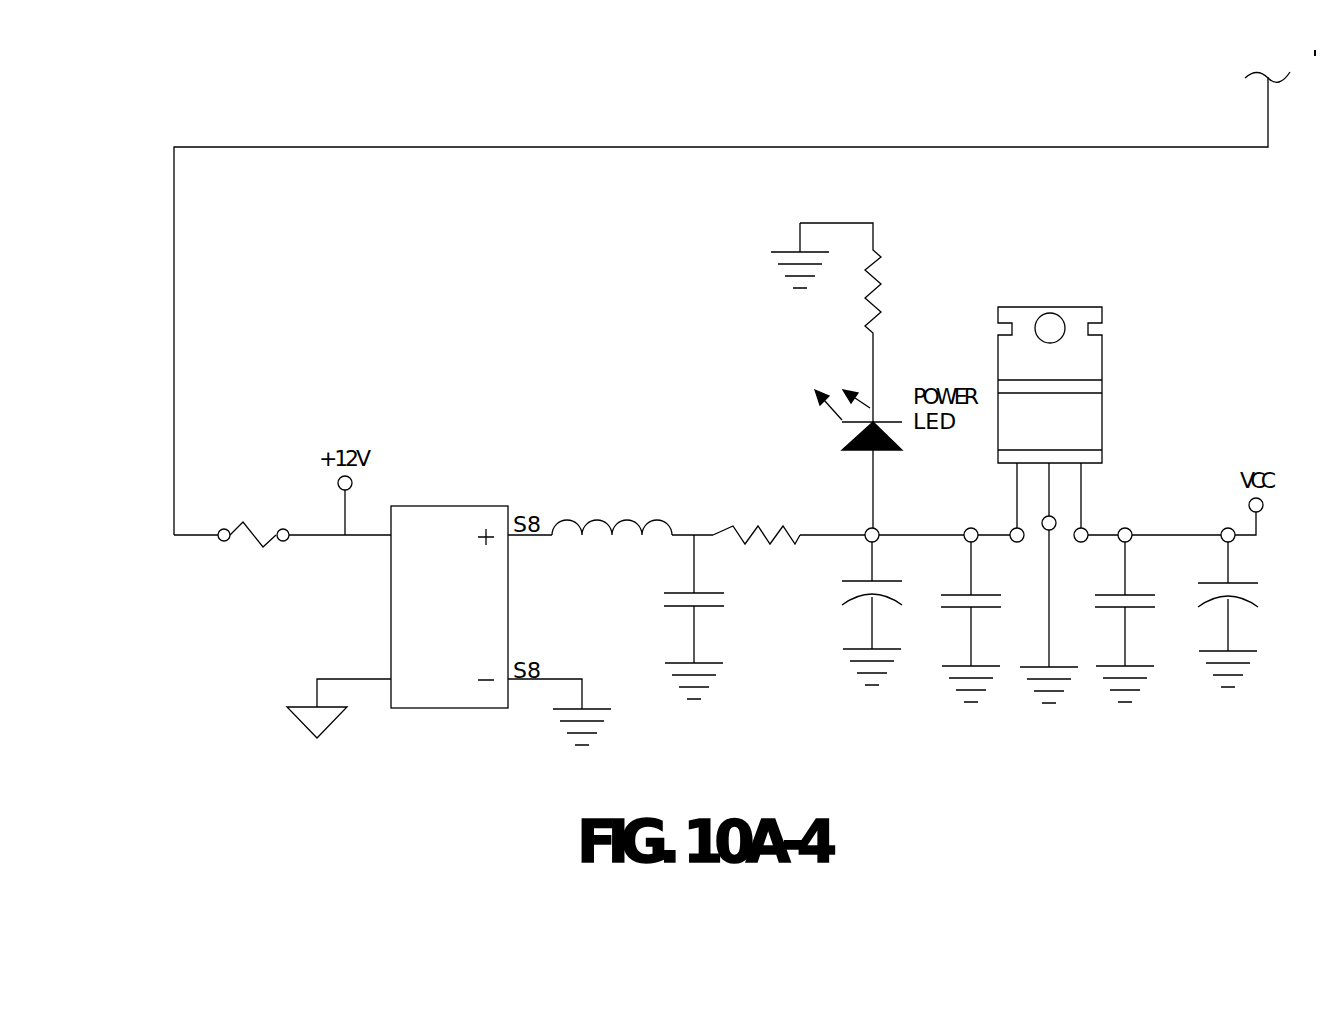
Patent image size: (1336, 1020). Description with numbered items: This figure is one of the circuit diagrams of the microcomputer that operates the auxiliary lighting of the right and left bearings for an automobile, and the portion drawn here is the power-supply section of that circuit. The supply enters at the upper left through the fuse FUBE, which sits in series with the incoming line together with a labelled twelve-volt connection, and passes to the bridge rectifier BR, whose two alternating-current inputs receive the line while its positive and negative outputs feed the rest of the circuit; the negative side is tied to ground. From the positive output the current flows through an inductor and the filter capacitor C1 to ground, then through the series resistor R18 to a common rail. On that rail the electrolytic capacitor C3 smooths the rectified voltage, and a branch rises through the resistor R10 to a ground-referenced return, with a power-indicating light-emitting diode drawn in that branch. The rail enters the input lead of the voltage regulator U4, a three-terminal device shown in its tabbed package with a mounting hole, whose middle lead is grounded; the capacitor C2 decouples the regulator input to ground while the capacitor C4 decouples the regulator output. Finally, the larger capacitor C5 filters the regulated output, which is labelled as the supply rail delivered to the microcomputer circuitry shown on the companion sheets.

The fuse FUBE is at (253, 551).
The bridge rectifier BR is at (449, 621).
The capacitor 0.1 C1 is at (716, 617).
The resistor 1R R18 is at (756, 513).
The resistor 2.2K R10 is at (871, 322).
The 7805 voltage regulator U4 is at (1050, 402).
The capacitor 470/20V C3 is at (904, 613).
The capacitor 0.1 C2 is at (990, 622).
The capacitor 0.1 C4 is at (1130, 622).
The capacitor 100/10V C5 is at (1264, 614).